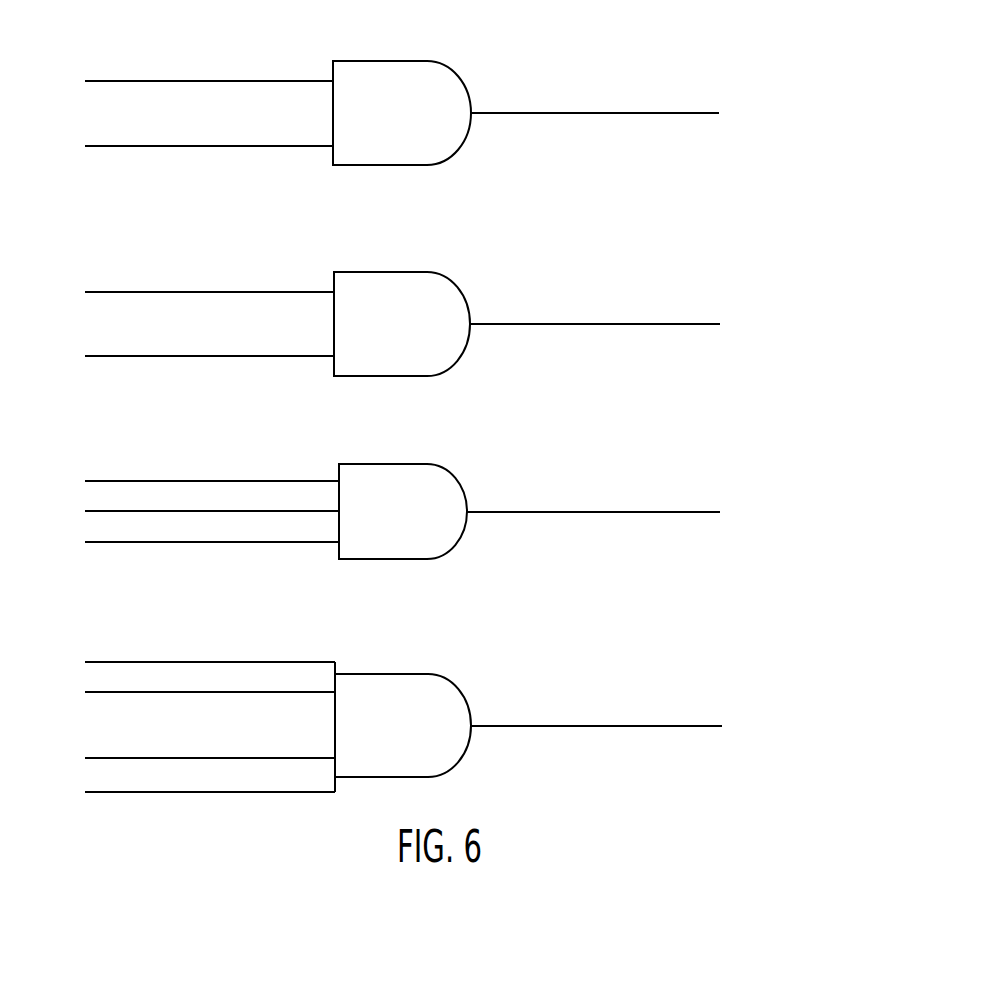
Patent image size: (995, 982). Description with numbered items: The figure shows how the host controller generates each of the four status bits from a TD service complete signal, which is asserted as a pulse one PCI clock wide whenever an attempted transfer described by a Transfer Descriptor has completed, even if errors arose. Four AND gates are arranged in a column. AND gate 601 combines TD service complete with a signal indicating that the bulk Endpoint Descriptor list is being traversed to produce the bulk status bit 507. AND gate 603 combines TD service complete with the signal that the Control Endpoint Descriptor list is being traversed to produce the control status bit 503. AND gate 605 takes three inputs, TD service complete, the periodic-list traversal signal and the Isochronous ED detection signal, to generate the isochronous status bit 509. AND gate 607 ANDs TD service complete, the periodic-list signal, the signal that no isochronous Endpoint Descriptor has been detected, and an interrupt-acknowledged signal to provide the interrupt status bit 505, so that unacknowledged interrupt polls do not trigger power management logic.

The AND gate 601 is at (428, 61).
The AND gate 603 is at (430, 272).
The AND gate 605 is at (428, 464).
The AND gate 607 is at (430, 674).
The bulk status bit 507 is at (700, 110).
The control status bit 503 is at (702, 321).
The isochronous status bit 509 is at (705, 510).
The interrupt status bit 505 is at (705, 723).